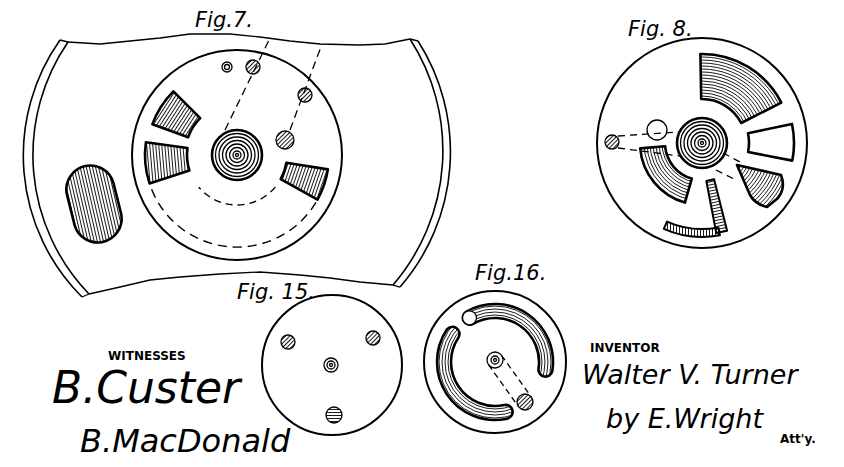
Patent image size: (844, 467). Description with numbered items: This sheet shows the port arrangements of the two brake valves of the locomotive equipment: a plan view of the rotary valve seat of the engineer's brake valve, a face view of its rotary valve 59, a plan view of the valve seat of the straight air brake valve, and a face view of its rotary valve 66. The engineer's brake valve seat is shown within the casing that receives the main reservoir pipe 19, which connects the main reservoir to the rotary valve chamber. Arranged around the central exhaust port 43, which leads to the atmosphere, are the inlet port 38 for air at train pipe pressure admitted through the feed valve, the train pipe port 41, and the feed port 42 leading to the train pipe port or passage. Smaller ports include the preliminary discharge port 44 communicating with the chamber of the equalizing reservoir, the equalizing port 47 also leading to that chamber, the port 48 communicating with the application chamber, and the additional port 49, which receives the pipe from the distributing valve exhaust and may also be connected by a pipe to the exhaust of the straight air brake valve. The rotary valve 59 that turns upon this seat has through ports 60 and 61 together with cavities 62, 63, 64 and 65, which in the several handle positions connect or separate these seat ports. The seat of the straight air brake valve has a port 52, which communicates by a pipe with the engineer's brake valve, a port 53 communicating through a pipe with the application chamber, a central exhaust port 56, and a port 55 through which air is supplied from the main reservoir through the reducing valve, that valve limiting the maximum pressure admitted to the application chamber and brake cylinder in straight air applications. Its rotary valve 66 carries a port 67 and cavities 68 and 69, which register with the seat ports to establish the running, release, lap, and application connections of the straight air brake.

In FIG. 7, the main reservoir pipe 19 is at (78, 183).
In FIG. 7, the inlet port 38 is at (156, 116).
In FIG. 7, the train pipe port 41 is at (312, 184).
In FIG. 7, the feed port 42 is at (151, 157).
In FIG. 7, the exhaust port 43 is at (241, 128).
In FIG. 7, the preliminary discharge port 44 is at (223, 63).
In FIG. 7, the equalizing port 47 is at (294, 137).
In FIG. 7, the port 48 is at (310, 91).
In FIG. 7, the additional port 49 is at (259, 63).
In FIG. 8, the rotary valve 59 is at (612, 90).
In FIG. 8, the through port 60 is at (786, 160).
In FIG. 8, the through port 61 is at (648, 126).
In FIG. 8, the cavity 62 is at (691, 127).
In FIG. 8, the cavity 63 is at (745, 72).
In FIG. 8, the cavity 64 is at (656, 180).
In FIG. 8, the cavity 65 is at (723, 235).
In FIG. 15, the port 52 is at (379, 337).
In FIG. 15, the port 53 is at (340, 421).
In FIG. 15, the port 55 is at (291, 337).
In FIG. 15, the exhaust port 56 is at (332, 358).
In FIG. 16, the rotary valve 66 is at (536, 312).
In FIG. 16, the port 67 is at (463, 314).
In FIG. 16, the cavity 68 is at (532, 407).
In FIG. 16, the cavity 69 is at (456, 403).